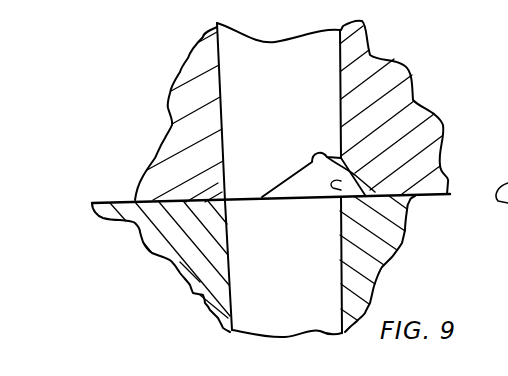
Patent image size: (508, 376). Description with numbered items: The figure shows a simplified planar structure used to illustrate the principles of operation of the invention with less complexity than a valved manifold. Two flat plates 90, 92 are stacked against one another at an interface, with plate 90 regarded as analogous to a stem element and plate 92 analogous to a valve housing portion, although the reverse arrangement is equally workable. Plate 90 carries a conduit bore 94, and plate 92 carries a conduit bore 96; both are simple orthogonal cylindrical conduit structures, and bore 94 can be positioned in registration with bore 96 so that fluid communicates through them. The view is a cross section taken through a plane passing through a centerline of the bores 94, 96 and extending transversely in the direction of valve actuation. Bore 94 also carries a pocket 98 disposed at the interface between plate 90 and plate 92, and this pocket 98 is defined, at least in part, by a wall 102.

The flat plate 90 is at (190, 88).
The flat plate 92 is at (190, 258).
The conduit bore 94 is at (280, 107).
The conduit bore 96 is at (273, 272).
The pocket 98 is at (318, 172).
The wall 102 is at (345, 183).